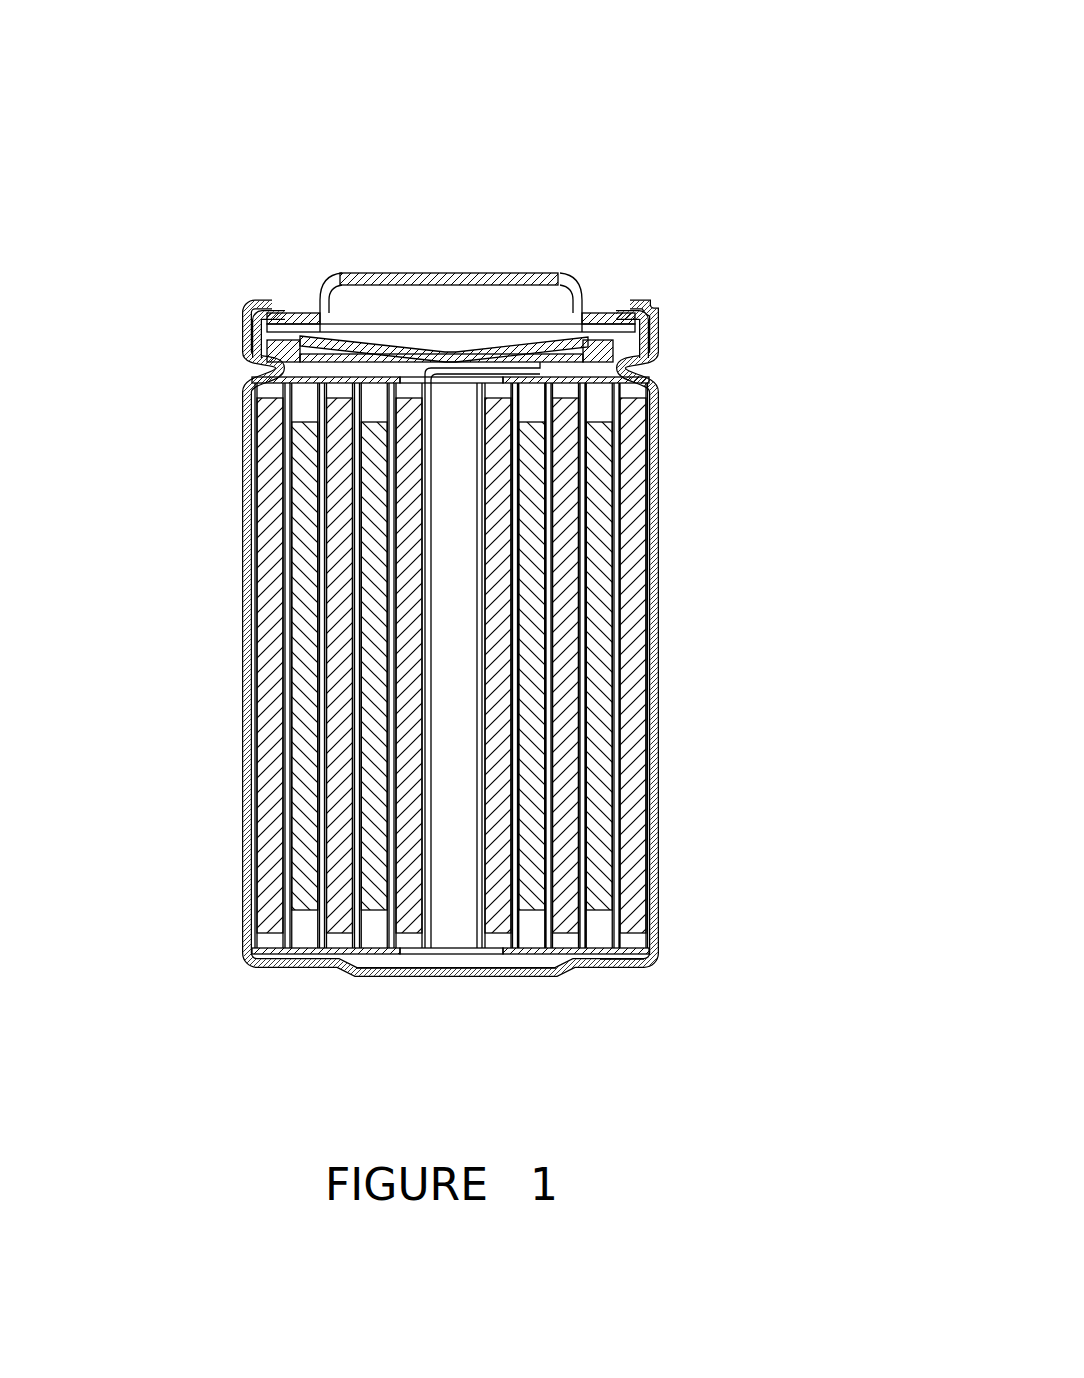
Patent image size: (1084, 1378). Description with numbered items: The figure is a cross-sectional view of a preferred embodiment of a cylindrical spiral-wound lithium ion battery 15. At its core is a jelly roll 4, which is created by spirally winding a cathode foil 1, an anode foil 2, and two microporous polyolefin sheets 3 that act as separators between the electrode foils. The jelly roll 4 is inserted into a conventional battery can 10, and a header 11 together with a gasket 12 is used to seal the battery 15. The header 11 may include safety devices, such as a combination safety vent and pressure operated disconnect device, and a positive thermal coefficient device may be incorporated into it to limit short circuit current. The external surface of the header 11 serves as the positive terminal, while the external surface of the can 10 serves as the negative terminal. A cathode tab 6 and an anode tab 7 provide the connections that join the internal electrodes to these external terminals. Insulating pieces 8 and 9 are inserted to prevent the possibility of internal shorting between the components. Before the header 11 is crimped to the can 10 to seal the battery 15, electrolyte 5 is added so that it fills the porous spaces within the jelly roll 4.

The cathode foil 1 is at (603, 759).
The anode foil 2 is at (246, 755).
The microporous polyolefin sheets 3 is at (282, 671).
The jelly roll 4 is at (247, 386).
The electrolyte 5 is at (562, 672).
The cathode tab 6 is at (409, 352).
The anode tab 7 is at (363, 971).
The insulating piece 8 is at (293, 351).
The insulating piece 9 is at (630, 966).
The battery can 10 is at (663, 504).
The header 11 is at (414, 266).
The gasket 12 is at (657, 300).
The battery 15 is at (624, 148).